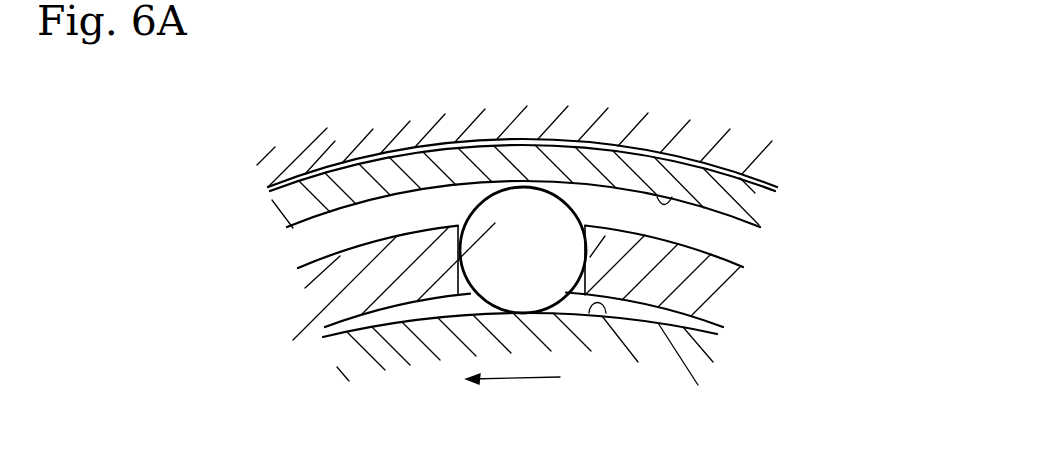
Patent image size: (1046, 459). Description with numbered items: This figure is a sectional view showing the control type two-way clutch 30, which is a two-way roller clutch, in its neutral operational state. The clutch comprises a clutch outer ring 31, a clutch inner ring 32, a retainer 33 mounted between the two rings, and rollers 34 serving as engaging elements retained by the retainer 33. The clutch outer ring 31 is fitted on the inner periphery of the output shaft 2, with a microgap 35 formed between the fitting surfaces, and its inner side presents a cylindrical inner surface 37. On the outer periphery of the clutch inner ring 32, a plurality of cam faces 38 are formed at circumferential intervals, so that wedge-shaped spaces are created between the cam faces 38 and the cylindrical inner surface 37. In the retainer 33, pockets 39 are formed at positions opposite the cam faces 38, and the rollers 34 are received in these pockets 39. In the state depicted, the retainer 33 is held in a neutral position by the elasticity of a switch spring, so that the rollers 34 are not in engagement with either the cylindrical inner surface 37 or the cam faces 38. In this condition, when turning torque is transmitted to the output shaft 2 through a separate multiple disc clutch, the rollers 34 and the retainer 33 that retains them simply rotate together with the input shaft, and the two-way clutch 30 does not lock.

The output shaft 2 is at (288, 158).
The control type two-way clutch 30 is at (355, 162).
The clutch outer ring 31 is at (412, 167).
The clutch inner ring 32 is at (360, 345).
The retainer 33 is at (320, 293).
The rollers 34 is at (517, 218).
The microgap 35 is at (601, 141).
The cylindrical inner surface 37 is at (672, 197).
The cam faces 38 is at (605, 316).
The pockets 39 is at (460, 250).